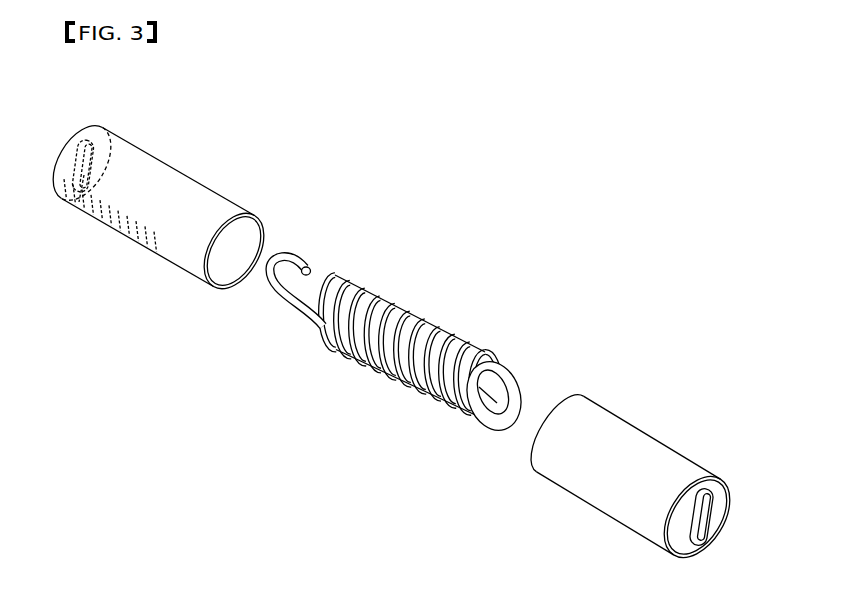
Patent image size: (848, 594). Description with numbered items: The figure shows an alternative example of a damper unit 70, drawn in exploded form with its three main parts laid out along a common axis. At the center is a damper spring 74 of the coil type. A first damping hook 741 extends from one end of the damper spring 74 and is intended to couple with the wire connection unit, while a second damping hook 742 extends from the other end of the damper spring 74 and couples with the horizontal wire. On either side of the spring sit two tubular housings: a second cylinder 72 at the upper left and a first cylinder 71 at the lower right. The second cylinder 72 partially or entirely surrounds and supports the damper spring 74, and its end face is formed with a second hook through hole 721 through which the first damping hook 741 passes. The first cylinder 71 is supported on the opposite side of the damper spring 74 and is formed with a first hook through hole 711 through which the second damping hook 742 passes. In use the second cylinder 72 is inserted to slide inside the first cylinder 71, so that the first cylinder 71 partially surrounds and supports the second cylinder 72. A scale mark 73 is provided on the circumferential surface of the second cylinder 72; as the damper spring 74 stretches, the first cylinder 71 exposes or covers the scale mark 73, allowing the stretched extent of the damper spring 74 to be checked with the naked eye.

The damper unit 70 is at (641, 163).
The first cylinder 71 is at (667, 430).
The first hook through hole 711 is at (704, 518).
The second cylinder 72 is at (189, 161).
The second hook through hole 721 is at (80, 161).
The scale mark 73 is at (120, 224).
The damper spring 74 is at (428, 309).
The first damping hook 741 is at (295, 252).
The second damping hook 742 is at (508, 386).